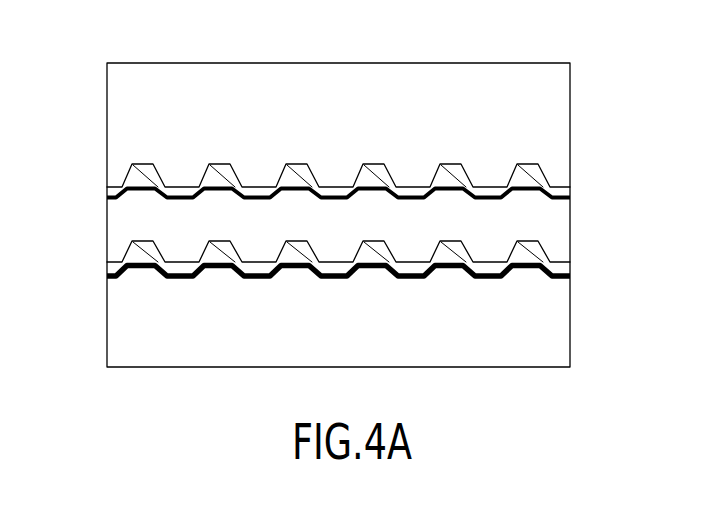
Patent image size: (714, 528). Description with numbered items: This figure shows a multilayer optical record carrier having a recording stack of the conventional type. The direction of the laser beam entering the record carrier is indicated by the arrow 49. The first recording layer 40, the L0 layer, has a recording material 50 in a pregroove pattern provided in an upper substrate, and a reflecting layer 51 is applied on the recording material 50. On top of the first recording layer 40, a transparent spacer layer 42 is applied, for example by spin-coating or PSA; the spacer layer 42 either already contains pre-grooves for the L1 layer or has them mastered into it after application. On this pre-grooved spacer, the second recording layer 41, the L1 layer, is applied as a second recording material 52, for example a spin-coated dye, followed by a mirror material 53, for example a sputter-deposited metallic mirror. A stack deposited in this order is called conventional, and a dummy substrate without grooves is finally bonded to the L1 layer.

The arrow 49 is at (348, 38).
The first recording layer 40 is at (346, 190).
The second recording layer 41 is at (346, 267).
The transparent spacer layer 42 is at (572, 227).
The recording material 50 is at (140, 168).
The reflecting layer 51 is at (140, 191).
The second recording material 52 is at (140, 246).
The mirror material 53 is at (140, 269).